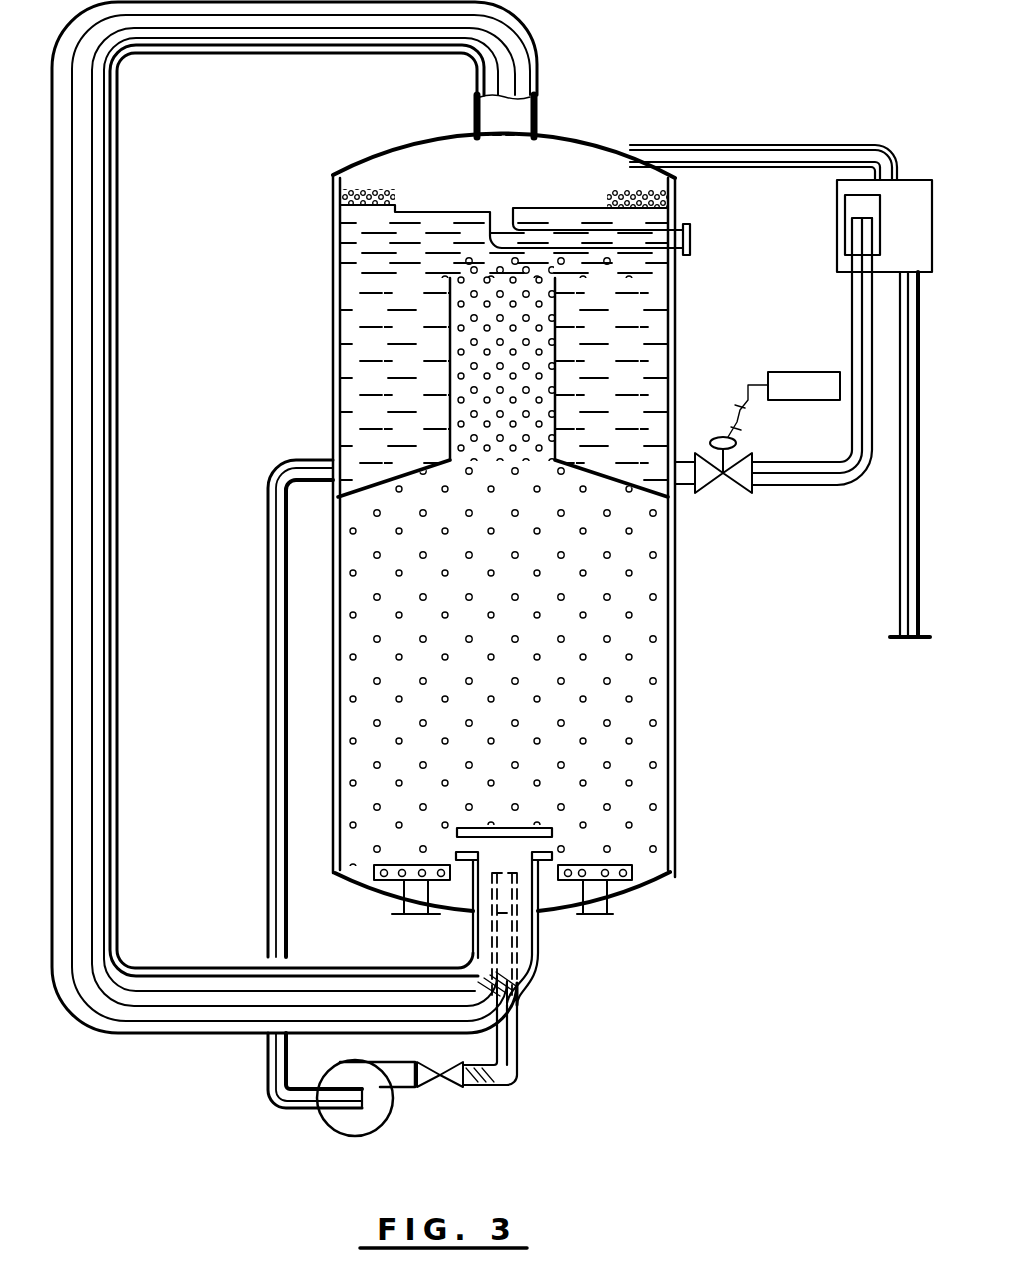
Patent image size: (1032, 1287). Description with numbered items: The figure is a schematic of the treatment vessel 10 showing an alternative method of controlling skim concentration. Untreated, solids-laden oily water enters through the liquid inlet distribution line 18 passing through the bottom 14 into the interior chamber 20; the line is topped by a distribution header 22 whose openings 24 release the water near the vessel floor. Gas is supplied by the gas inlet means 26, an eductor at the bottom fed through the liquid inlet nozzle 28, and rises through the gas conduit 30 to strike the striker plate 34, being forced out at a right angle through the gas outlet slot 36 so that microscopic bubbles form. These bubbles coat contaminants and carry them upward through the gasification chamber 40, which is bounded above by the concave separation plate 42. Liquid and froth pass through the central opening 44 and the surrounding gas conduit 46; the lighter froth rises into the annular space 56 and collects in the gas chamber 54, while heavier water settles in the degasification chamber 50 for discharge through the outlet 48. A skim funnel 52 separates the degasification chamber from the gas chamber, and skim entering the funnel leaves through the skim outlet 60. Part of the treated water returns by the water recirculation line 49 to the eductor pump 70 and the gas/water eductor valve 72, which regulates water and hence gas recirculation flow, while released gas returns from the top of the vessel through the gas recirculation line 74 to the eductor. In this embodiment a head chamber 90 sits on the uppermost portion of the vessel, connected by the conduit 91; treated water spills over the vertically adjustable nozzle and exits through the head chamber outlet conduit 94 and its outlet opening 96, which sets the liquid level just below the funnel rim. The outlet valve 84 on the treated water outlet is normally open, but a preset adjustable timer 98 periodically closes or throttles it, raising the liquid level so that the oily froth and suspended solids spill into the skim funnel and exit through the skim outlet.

The vessel 10 is at (613, 78).
The bottom 14 is at (655, 885).
The liquid inlet distribution line 18 is at (400, 914).
The interior chamber 20 is at (660, 703).
The distribution header 22 is at (375, 872).
The openings 24 is at (441, 868).
The gas inlet means (eductor) 26 is at (540, 975).
The liquid inlet nozzle 28 is at (505, 895).
The gas conduit 30 is at (472, 940).
The striker plate 34 is at (535, 828).
The gas outlet slot 36 is at (457, 842).
The gasification chamber 40 is at (606, 630).
The separation plate 42 is at (373, 482).
The opening 44 is at (465, 393).
The gas conduit 46 is at (450, 340).
The outlet 48 is at (680, 460).
The water recirculation line 49 is at (268, 685).
The degasification chamber 50 is at (655, 355).
The skim funnel 52 is at (435, 210).
The gas chamber 54 is at (516, 176).
The annular space 56 is at (370, 190).
The skim outlet 60 is at (680, 232).
The eductor pump 70 is at (335, 1125).
The gas/water eductor valve 72 is at (445, 1080).
The gas recirculation line 74 is at (310, 52).
The outlet valve 84 is at (752, 490).
The head chamber 90 is at (837, 208).
The conduit 91 is at (740, 148).
The head chamber outlet conduit 94 is at (850, 220).
The outlet opening 96 is at (900, 593).
The timer 98 is at (825, 372).